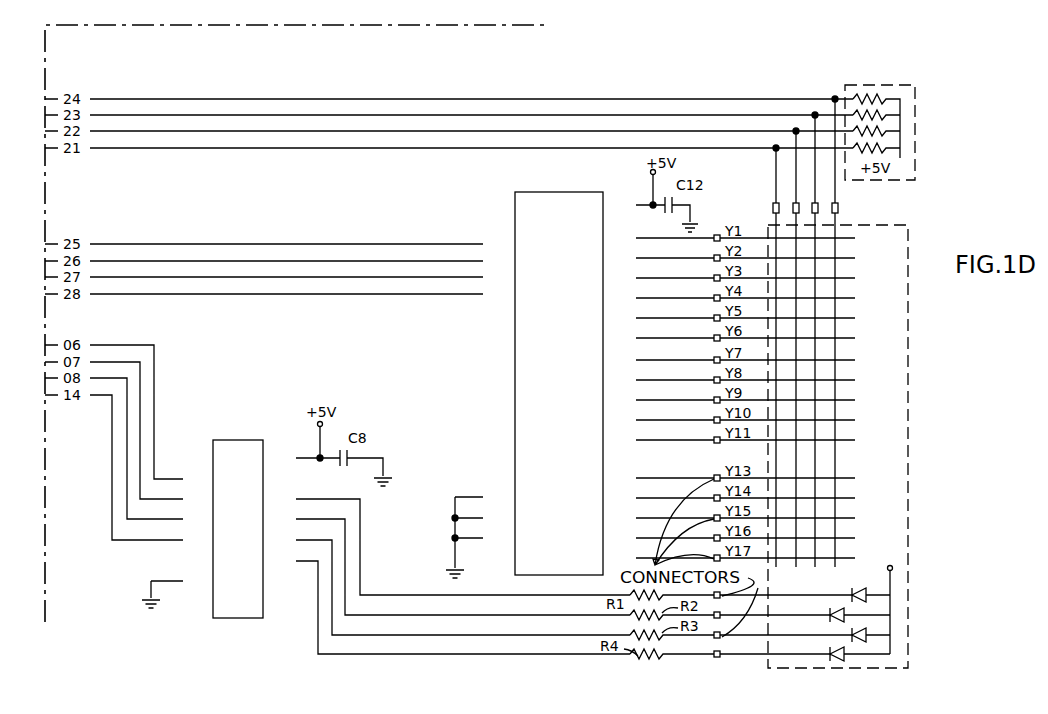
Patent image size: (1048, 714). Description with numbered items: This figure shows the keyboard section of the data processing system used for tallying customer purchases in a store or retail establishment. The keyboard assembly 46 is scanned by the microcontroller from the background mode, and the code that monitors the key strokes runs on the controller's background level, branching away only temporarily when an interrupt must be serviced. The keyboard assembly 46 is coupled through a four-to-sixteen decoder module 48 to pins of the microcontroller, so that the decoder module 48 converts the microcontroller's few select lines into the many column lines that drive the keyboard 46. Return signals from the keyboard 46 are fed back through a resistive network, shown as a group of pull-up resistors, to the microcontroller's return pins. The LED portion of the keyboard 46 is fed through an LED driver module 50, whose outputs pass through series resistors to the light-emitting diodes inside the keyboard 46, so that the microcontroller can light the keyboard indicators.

The keyboard assembly 46 is at (868, 226).
The 4-16 decoder module 48 is at (520, 215).
The LED driver module 50 is at (240, 440).